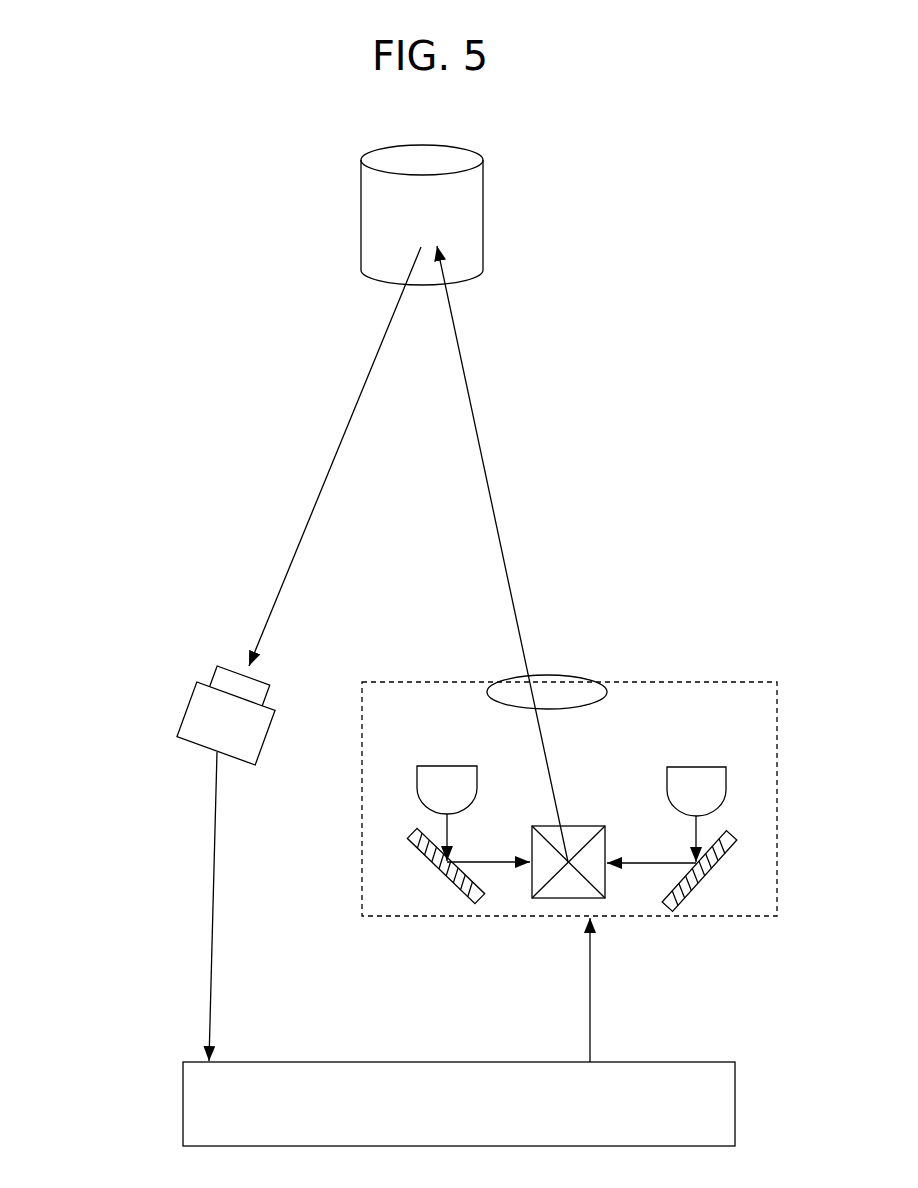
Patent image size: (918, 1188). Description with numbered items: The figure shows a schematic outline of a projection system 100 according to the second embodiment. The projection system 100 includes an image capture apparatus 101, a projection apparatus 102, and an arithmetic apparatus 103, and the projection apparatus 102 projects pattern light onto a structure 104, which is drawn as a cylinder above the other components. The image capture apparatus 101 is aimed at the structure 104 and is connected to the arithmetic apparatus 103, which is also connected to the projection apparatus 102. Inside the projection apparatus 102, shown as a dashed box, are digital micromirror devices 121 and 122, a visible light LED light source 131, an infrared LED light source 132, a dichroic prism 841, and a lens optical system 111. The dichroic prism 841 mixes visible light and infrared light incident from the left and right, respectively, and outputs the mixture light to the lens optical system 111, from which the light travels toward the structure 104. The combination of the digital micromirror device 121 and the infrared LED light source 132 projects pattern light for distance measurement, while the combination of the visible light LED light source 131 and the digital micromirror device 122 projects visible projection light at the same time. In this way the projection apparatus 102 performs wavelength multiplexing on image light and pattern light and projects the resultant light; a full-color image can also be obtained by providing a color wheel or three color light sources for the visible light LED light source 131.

The projection system 100 is at (136, 343).
The image capture apparatus 101 is at (208, 752).
The projection apparatus 102 is at (777, 822).
The arithmetic apparatus 103 is at (735, 1107).
The structure 104 is at (483, 208).
The lens optical system 111 is at (572, 687).
The digital micromirror device 121 is at (687, 895).
The digital micromirror device 122 is at (442, 872).
The visible light LED light source 131 is at (448, 765).
The infrared LED light source 132 is at (705, 767).
The dichroic prism 841 is at (553, 898).